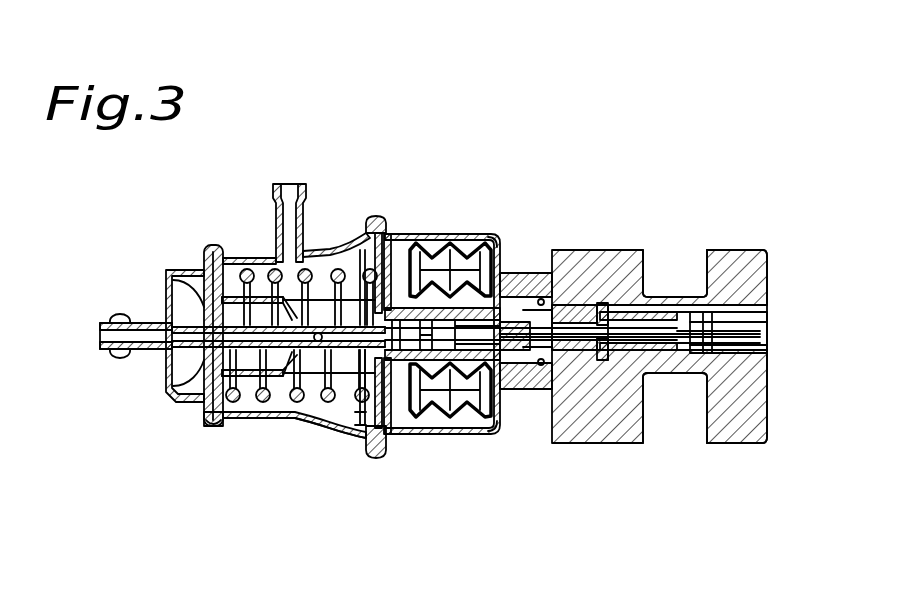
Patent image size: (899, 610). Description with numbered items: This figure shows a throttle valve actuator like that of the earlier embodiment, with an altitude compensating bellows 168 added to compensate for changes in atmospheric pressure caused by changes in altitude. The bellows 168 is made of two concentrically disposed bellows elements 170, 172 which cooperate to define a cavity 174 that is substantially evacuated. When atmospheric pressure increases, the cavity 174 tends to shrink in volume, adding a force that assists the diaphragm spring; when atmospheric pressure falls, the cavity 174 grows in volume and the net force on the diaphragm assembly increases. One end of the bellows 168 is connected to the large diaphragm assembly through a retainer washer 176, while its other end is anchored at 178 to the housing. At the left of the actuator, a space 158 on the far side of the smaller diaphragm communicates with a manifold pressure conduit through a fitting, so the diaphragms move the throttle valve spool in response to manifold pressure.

The space 158 is at (167, 356).
The altitude compensating bellows 168 is at (458, 436).
The bellows element 170 is at (480, 434).
The bellows element 172 is at (476, 238).
The cavity 174 is at (437, 434).
The retainer washer 176 is at (397, 262).
The anchor 178 is at (503, 252).